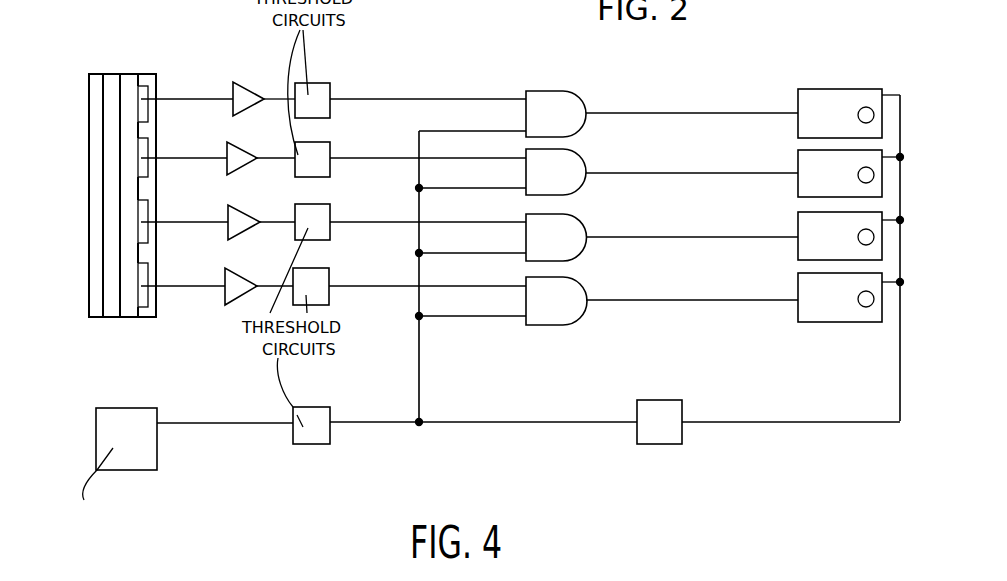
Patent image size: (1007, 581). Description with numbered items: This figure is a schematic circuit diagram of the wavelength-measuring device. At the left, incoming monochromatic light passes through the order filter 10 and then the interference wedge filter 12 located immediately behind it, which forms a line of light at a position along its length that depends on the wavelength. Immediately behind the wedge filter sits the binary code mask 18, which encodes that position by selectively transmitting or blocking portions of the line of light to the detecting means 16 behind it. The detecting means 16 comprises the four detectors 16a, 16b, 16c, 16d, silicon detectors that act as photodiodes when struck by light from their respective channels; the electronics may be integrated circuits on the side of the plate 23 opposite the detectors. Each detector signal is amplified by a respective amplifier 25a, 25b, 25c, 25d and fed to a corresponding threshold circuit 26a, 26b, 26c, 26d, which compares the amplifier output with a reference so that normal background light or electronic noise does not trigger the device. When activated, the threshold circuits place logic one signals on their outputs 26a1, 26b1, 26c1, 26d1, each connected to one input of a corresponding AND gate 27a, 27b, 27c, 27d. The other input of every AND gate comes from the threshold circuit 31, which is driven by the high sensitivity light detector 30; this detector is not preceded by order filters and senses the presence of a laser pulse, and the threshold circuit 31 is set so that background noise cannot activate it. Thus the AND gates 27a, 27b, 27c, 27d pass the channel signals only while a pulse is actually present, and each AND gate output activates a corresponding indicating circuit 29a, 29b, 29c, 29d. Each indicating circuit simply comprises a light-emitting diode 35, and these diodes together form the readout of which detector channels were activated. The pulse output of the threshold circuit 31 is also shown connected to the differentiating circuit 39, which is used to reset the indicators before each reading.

The order filter 10 is at (88, 77).
The interference wedge filter 12 is at (110, 82).
The code mask 18 is at (126, 80).
The detecting means 16 is at (150, 74).
The detector 16a is at (148, 88).
The detector 16b is at (148, 150).
The detector 16c is at (148, 212).
The detector 16d is at (148, 276).
The plate 23 is at (150, 310).
The amplifier 25a is at (268, 74).
The amplifier 25b is at (262, 136).
The amplifier 25c is at (262, 198).
The amplifier 25d is at (262, 260).
The threshold circuit 26a is at (320, 92).
The threshold circuit 26b is at (322, 150).
The threshold circuit 26c is at (322, 212).
The threshold circuit 26d is at (322, 278).
The threshold circuit output 26a1 is at (345, 99).
The threshold circuit output 26b1 is at (336, 158).
The threshold circuit output 26c1 is at (336, 222).
The threshold circuit output 26d1 is at (336, 286).
The AND gate 27a is at (598, 81).
The AND gate 27b is at (584, 158).
The AND gate 27c is at (584, 224).
The AND gate 27d is at (584, 287).
The indicating circuit 29a is at (798, 92).
The indicating circuit 29b is at (798, 153).
The indicating circuit 29c is at (798, 216).
The indicating circuit 29d is at (798, 278).
The light-emitting diode 35 is at (858, 116).
The light detector 30 is at (121, 414).
The threshold circuit 31 is at (320, 390).
The differentiating circuit 39 is at (672, 385).